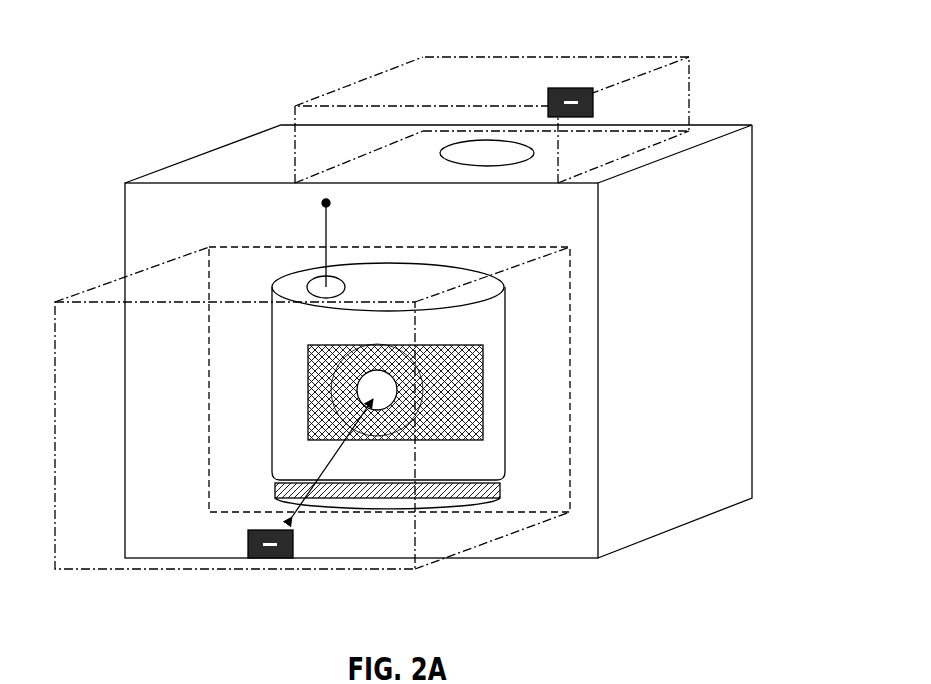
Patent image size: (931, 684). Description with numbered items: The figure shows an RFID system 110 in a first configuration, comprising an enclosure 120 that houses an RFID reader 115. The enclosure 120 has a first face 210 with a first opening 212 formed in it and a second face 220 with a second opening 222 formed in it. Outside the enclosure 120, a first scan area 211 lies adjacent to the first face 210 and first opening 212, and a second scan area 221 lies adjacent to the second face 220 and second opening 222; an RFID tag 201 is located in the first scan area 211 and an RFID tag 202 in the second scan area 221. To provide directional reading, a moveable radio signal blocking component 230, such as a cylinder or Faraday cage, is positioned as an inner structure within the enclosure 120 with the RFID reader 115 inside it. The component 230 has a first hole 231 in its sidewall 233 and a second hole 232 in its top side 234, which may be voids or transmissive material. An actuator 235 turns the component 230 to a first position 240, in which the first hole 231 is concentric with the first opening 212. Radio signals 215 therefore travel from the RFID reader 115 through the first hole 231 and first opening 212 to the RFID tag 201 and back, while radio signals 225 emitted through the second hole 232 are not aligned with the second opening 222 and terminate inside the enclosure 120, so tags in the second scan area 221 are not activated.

The RFID system 110 is at (475, 340).
The enclosure 120 is at (725, 508).
The first face 210 is at (585, 540).
The second face 220 is at (734, 124).
The second scan area 221 is at (304, 103).
The second opening 222 is at (487, 140).
The RFID tag 202 is at (578, 88).
The RFID tag 201 is at (258, 560).
The first scan area 211 is at (375, 572).
The component 230 is at (507, 480).
The sidewall 233 is at (318, 393).
The top side 234 is at (293, 287).
The second hole 232 is at (310, 278).
The radio signals 225 is at (322, 220).
The actuator 235 is at (272, 490).
The first position 240 is at (365, 506).
The RFID reader 115 is at (388, 382).
The first hole 231 is at (356, 390).
The first opening 212 is at (383, 440).
The radio signals 215 is at (323, 500).